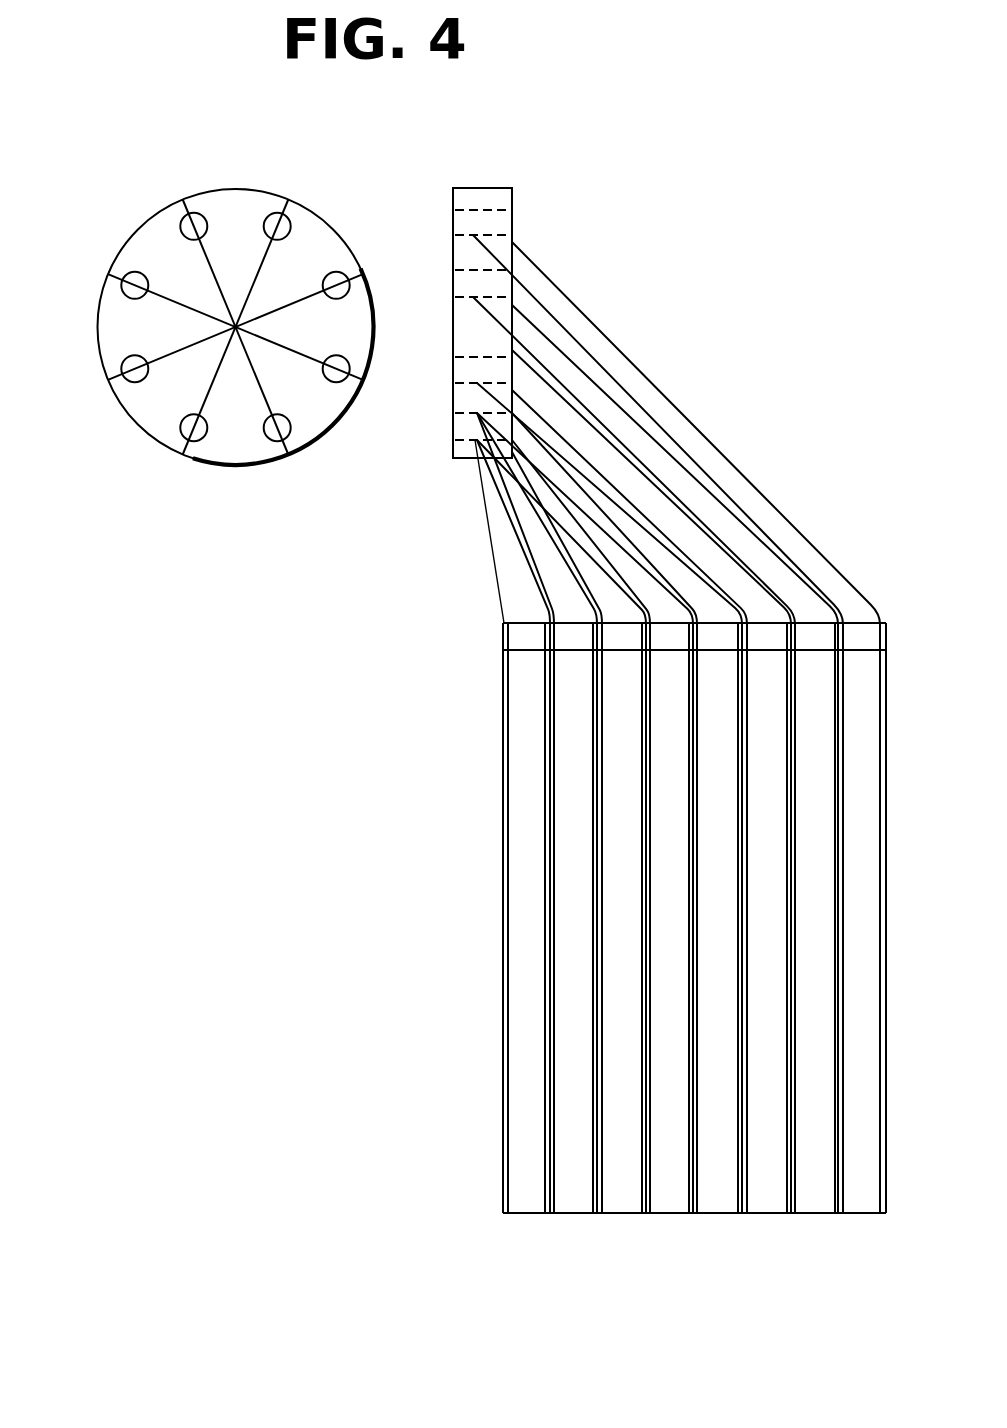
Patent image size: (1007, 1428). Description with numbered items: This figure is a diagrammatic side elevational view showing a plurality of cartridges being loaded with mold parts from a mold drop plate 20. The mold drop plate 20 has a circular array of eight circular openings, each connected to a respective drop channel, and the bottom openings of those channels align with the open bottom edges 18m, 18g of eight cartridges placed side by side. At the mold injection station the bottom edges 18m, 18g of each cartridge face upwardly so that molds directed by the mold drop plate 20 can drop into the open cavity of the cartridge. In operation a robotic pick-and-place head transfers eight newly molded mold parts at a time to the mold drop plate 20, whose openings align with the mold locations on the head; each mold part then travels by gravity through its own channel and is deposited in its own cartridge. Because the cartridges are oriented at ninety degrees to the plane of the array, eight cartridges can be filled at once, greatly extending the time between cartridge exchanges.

The mold drop plate 20 is at (488, 187).
The bottom edge of cartridge 18g is at (543, 621).
The bottom edge of cartridge 18m is at (504, 624).